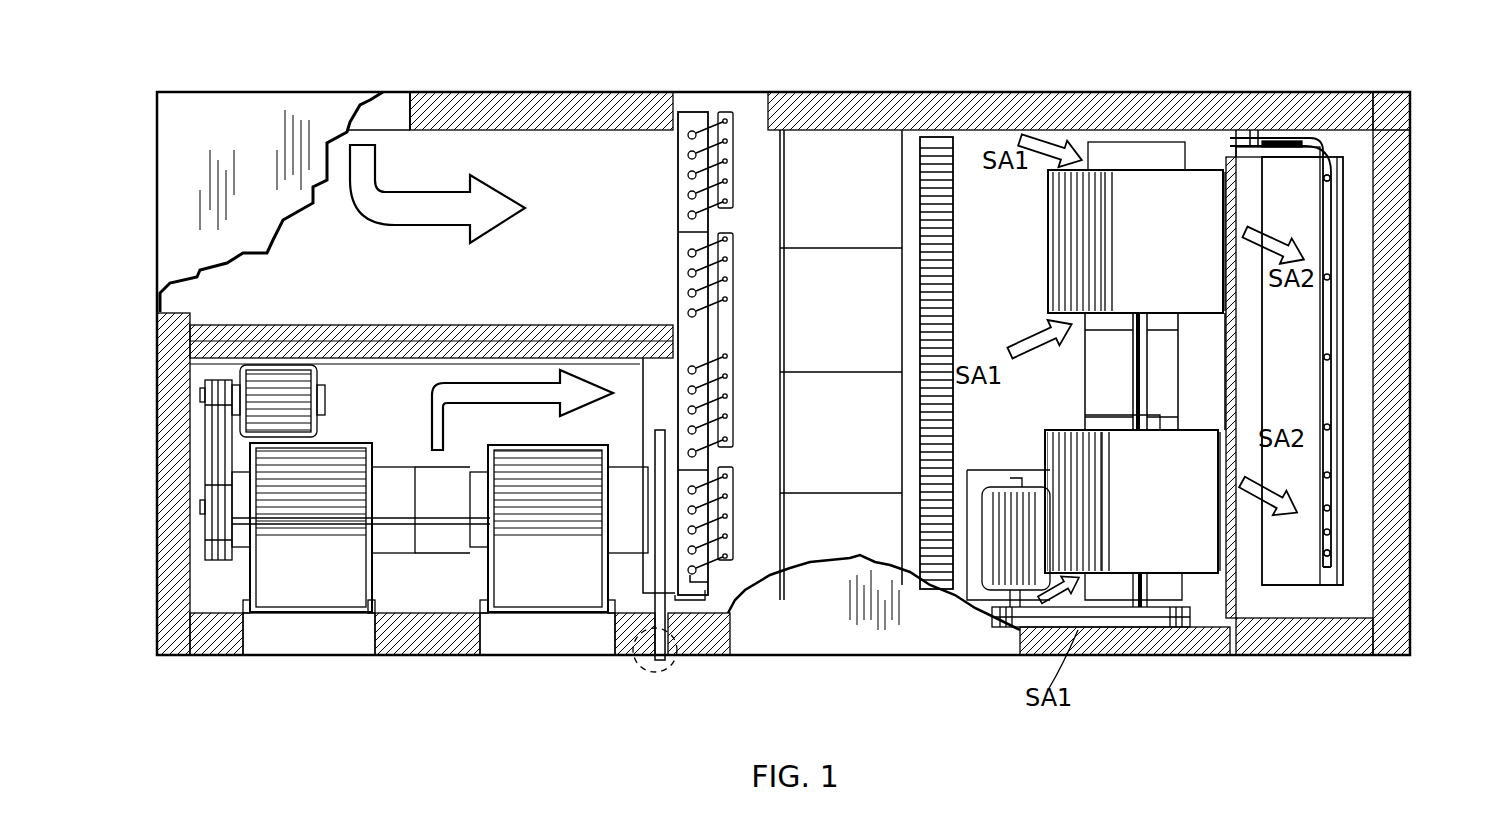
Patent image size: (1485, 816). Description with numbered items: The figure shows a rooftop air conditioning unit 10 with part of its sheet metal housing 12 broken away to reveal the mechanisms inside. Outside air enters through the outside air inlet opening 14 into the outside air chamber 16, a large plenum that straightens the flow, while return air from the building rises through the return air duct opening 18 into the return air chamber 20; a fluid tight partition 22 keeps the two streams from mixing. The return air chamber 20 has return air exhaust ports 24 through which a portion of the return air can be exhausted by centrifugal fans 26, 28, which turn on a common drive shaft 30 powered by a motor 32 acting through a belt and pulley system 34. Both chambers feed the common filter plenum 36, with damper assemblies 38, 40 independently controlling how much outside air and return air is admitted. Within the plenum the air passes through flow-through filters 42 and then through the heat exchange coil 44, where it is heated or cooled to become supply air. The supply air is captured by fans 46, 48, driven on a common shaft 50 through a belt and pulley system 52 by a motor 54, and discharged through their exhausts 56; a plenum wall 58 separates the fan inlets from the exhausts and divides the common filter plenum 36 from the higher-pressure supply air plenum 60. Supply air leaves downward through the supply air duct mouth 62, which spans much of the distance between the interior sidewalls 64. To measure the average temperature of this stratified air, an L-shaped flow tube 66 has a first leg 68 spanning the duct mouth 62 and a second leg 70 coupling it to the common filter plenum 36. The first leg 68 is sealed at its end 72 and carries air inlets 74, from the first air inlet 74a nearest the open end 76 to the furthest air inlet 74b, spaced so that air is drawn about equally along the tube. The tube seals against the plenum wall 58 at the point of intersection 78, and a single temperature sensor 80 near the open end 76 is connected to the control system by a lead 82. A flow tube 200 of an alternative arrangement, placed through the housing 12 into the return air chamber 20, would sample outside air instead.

The air conditioning unit 10 is at (236, 666).
The housing 12 is at (527, 94).
The outside air inlet opening 14 is at (397, 92).
The outside air chamber 16 is at (432, 287).
The return air duct opening 18 is at (400, 376).
The return air chamber 20 is at (385, 440).
The fluid tight partition 22 is at (309, 330).
The return air exhaust ports 24 is at (323, 637).
The centrifugal fan 26 is at (290, 575).
The centrifugal fan 28 is at (533, 575).
The common drive shaft 30 is at (417, 517).
The motor 32 is at (315, 390).
The belt and pulley system 34 is at (205, 508).
The common filter plenum 36 is at (747, 112).
The damper assembly 38 is at (678, 181).
The damper assembly 40 is at (700, 575).
The filters 42 is at (845, 157).
The heat exchange coil 44 is at (953, 238).
The fan 46 is at (1124, 259).
The fan 48 is at (1119, 511).
The common shaft 50 is at (1130, 390).
The belt and pulley system 52 is at (1108, 630).
The motor 54 is at (995, 488).
The exhausts 56 is at (1238, 555).
The plenum wall 58 is at (1240, 360).
The supply air plenum 60 is at (1300, 627).
The supply air duct mouth 62 is at (1345, 504).
The interior sidewalls 64 is at (1382, 137).
The flow tube 66 is at (1335, 151).
The first leg 68 is at (1333, 294).
The second leg 70 is at (1330, 133).
The end 72 is at (1342, 620).
The air inlets 74 is at (1330, 475).
The first air inlet 74a is at (1330, 178).
The air inlet 74b is at (1330, 555).
The open end 76 is at (1230, 122).
The point of intersection 78 is at (1245, 158).
The temperature sensor 80 is at (1273, 142).
The lead 82 is at (1216, 75).
The flow tube 200 is at (648, 662).